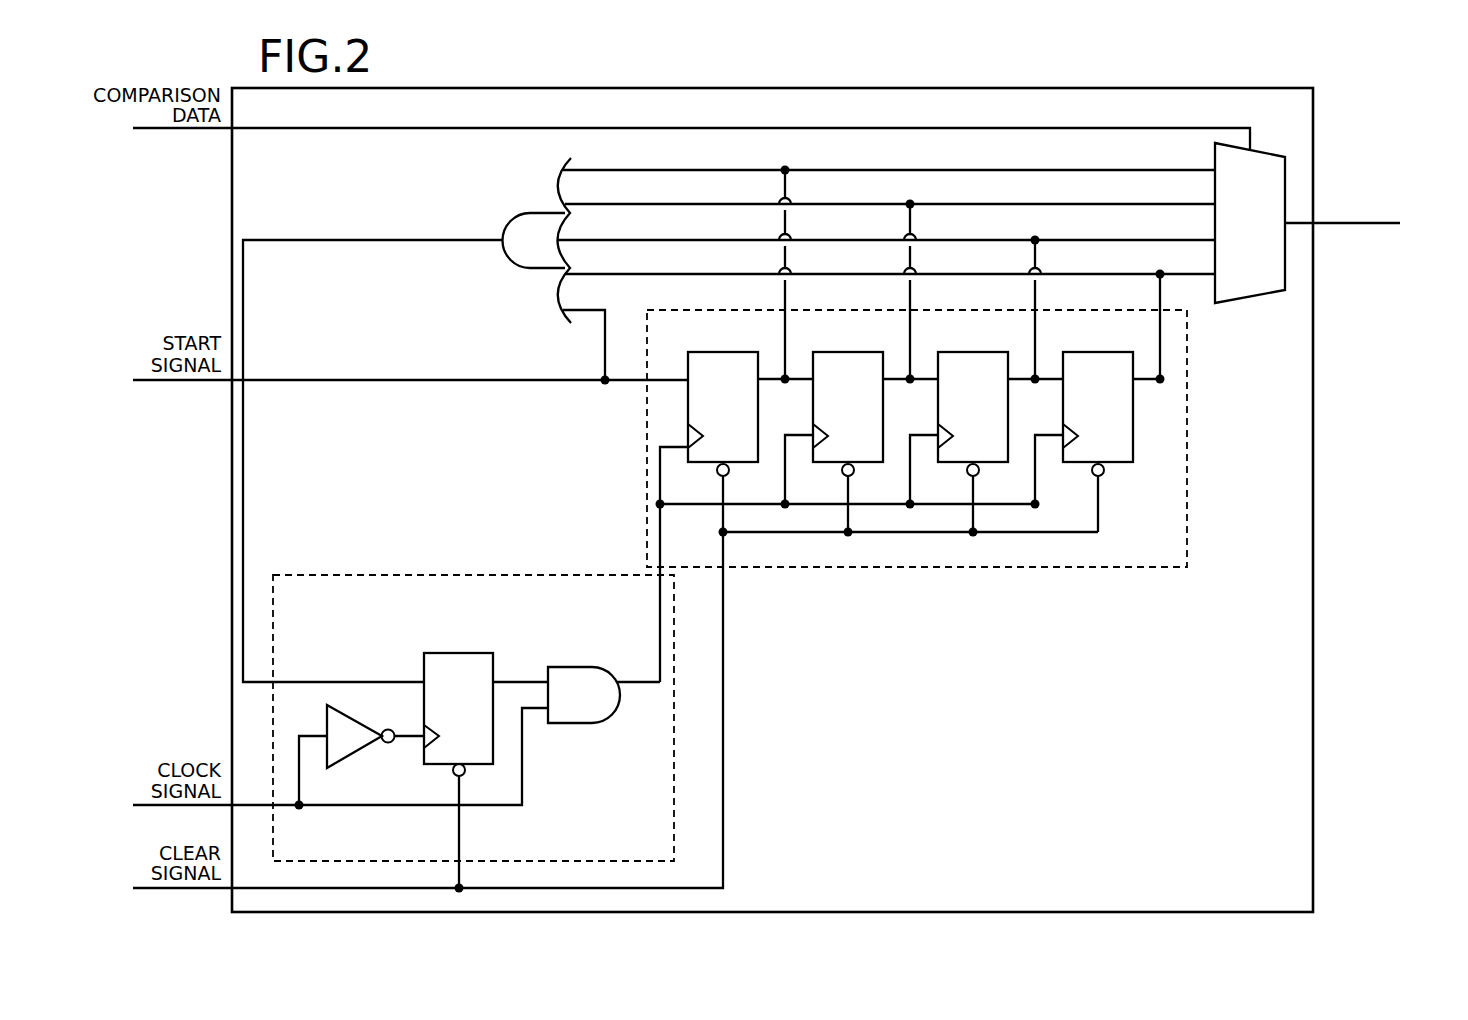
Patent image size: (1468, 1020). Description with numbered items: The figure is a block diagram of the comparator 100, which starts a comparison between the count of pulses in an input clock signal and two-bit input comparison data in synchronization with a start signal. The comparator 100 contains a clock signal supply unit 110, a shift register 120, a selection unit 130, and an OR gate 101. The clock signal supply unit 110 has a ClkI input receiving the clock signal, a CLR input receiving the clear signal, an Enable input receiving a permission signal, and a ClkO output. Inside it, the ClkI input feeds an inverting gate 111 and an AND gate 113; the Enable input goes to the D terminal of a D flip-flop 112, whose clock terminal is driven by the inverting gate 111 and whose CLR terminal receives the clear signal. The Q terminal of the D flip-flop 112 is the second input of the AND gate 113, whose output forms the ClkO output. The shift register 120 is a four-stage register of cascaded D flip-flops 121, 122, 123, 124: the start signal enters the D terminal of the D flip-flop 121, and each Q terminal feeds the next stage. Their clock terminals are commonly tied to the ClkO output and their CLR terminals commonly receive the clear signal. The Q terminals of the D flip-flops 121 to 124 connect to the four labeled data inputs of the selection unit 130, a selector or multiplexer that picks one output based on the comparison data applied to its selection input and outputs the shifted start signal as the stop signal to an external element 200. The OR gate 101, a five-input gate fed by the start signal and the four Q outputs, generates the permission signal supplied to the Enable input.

The comparator 100 is at (891, 88).
The OR gate 101 is at (536, 211).
The clock signal supply unit 110 is at (511, 575).
The inverting gate 111 is at (357, 758).
The D flip-flop 112 is at (459, 652).
The AND gate 113 is at (572, 666).
The shift register 120 is at (1112, 572).
The D flip-flop 121 is at (712, 351).
The D flip-flop 122 is at (837, 351).
The D flip-flop 123 is at (962, 351).
The D flip-flop 124 is at (1087, 351).
The selection unit 130 is at (1257, 300).
The stop signal output 200 is at (1370, 204).